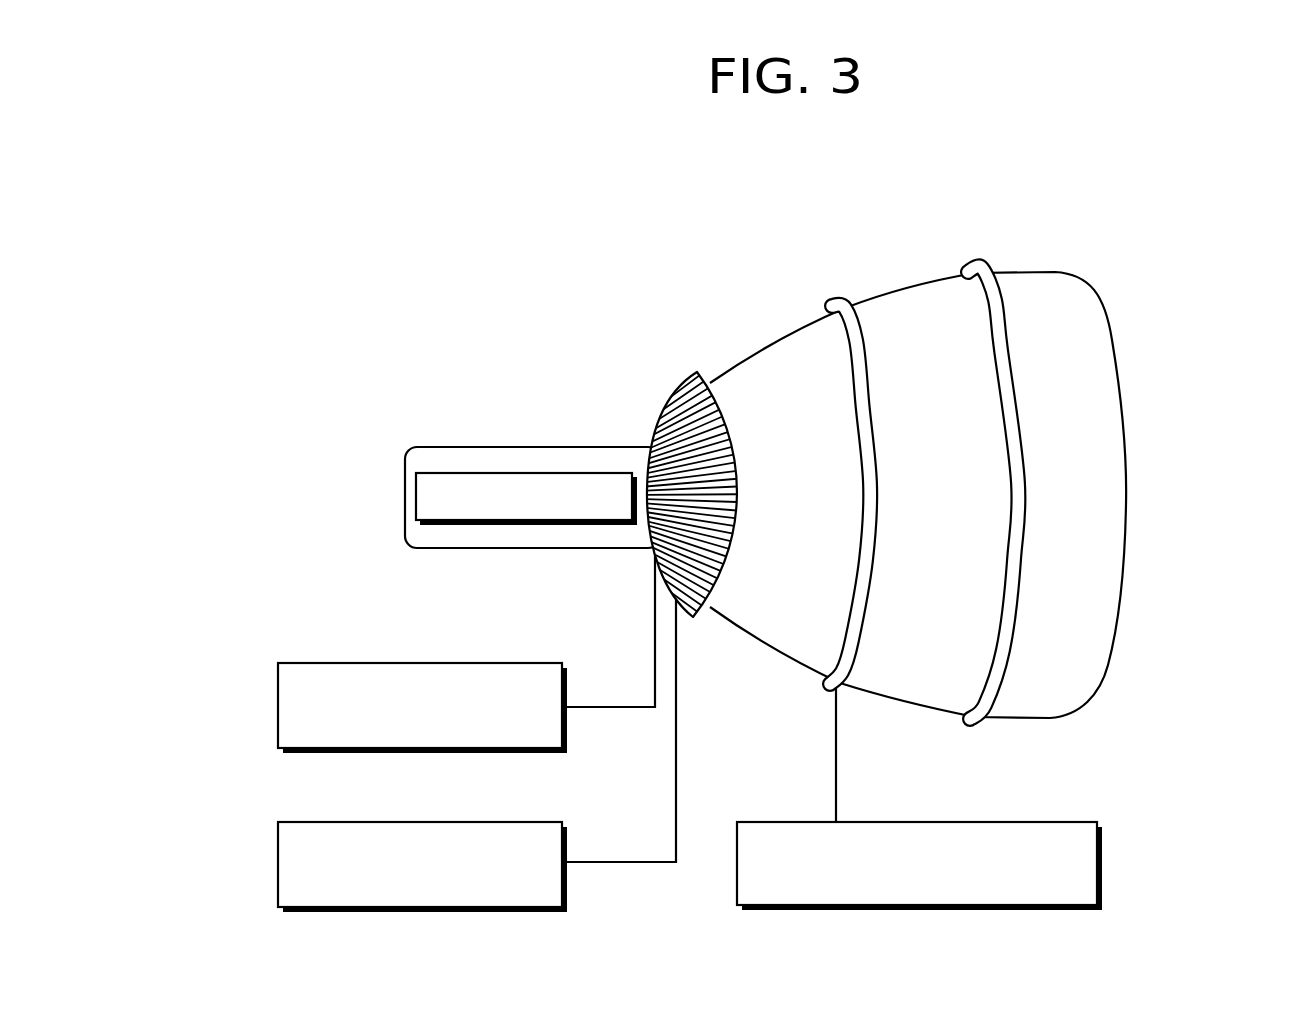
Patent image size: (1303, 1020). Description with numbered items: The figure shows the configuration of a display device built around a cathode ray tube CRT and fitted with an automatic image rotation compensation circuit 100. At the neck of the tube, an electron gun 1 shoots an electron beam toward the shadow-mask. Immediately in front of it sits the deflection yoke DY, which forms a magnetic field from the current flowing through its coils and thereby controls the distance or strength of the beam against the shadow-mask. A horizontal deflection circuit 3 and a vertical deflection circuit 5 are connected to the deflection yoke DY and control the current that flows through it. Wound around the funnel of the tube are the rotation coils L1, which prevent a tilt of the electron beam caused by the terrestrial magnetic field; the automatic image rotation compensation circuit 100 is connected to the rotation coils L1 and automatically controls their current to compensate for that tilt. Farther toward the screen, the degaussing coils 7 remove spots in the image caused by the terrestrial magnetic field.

The electron gun 1 is at (530, 473).
The horizontal deflection circuit 3 is at (278, 708).
The vertical deflection circuit 5 is at (278, 865).
The degaussing coils 7 is at (980, 263).
The automatic image rotation compensation circuit 100 is at (1102, 861).
The deflection yoke DY is at (680, 453).
The rotation coils L1 is at (842, 296).
The cathode ray tube CRT is at (1125, 506).